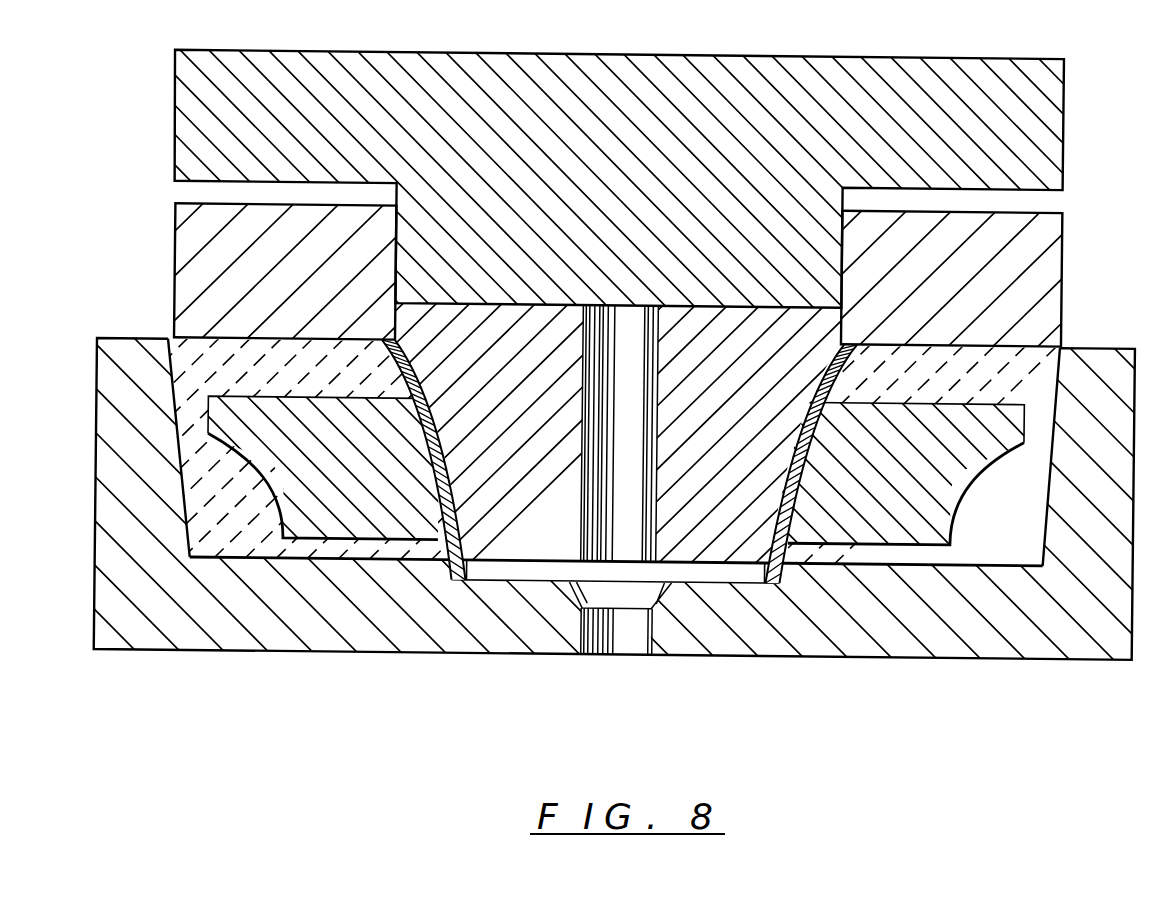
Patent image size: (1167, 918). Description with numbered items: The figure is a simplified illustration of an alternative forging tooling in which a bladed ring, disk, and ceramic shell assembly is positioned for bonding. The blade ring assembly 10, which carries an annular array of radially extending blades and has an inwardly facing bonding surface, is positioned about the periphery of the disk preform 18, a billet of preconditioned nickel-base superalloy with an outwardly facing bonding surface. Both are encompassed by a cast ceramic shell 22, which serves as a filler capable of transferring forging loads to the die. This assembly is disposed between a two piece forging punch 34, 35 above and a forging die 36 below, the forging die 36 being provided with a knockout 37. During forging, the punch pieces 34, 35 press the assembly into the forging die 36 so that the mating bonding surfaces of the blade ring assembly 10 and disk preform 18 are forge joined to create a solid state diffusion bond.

The blade ring assembly 10 is at (921, 563).
The disk preform 18 is at (764, 450).
The ceramic shell 22 is at (331, 378).
The forging punch 34 is at (317, 60).
The forging punch 35 is at (180, 256).
The forging die 36 is at (327, 636).
The knockout 37 is at (627, 637).